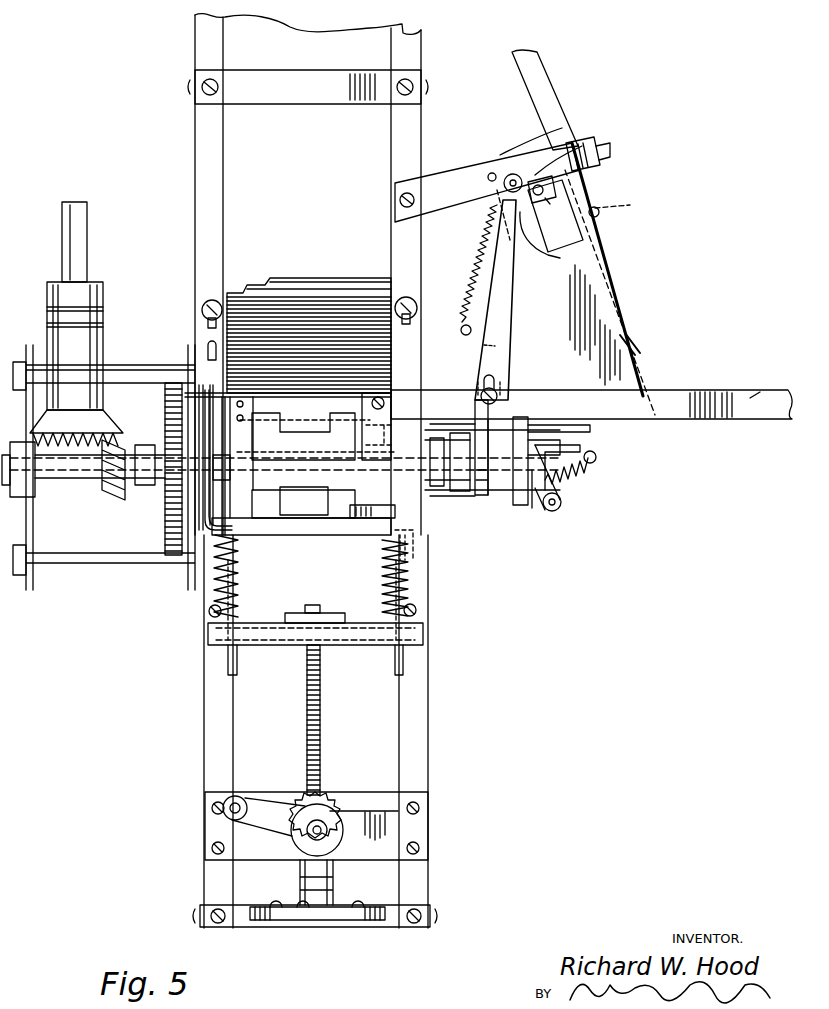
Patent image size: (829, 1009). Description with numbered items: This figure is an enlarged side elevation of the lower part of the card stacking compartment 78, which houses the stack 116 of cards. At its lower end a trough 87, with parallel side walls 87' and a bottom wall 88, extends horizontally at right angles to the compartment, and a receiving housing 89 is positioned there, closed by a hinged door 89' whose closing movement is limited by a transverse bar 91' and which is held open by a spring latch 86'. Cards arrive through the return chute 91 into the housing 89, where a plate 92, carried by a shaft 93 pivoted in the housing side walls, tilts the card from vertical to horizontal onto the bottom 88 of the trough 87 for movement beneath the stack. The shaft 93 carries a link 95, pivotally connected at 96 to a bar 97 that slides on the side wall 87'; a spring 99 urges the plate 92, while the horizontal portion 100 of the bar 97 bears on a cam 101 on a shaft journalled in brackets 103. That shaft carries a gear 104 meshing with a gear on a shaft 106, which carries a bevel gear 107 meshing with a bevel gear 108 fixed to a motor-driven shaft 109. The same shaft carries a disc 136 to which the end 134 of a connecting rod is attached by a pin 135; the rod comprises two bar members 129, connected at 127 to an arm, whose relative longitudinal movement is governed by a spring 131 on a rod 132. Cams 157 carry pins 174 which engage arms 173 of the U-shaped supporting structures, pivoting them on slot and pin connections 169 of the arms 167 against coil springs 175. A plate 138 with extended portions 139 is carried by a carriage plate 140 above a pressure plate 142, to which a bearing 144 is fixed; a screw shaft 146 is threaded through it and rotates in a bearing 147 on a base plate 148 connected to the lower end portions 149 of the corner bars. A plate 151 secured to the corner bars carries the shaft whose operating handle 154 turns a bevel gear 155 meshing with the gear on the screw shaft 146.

The stacking compartment 78 is at (372, 165).
The stack of cards 116 is at (345, 288).
The slot and pin connection 169 is at (200, 312).
The arm 167 is at (195, 338).
The arm 173 is at (385, 445).
The cam 157 is at (270, 415).
The pin 174 is at (348, 448).
The extended portion 139 is at (327, 525).
The plate 138 is at (395, 512).
The carriage plate 140 is at (413, 538).
The shaft 109 is at (85, 250).
The gear 104 is at (168, 530).
The bevel gear 108 is at (110, 418).
The bevel gear 107 is at (112, 500).
The shaft 106 is at (155, 450).
The return chute 91 is at (549, 100).
The pivotal connection 96 is at (510, 170).
The link 95 is at (565, 140).
The spring latch 86' is at (600, 152).
The shaft 93 is at (560, 195).
The plate 92 is at (612, 206).
The receiving housing 89 is at (607, 269).
The door 89' is at (610, 292).
The transverse bar 91' is at (646, 343).
The bar 97 is at (500, 318).
The spring 99 is at (470, 240).
The horizontal portion 100 is at (500, 395).
The bottom wall 88 is at (725, 419).
The side wall 87' is at (698, 384).
The trough 87 is at (751, 381).
The bracket 103 is at (432, 485).
The pin 135 is at (545, 425).
The connection 127 is at (580, 446).
The bar member 129 is at (585, 458).
The spring 131 is at (578, 490).
The rod 132 is at (558, 510).
The end 134 is at (545, 510).
The disc 136 is at (524, 510).
The cam 101 is at (492, 490).
The coil spring 175 is at (213, 575).
The pressure plate 142 is at (423, 635).
The bearing 144 is at (325, 613).
The screw shaft 146 is at (320, 740).
The plate 151 is at (418, 830).
The operating handle 154 is at (250, 805).
The bevel gear 155 is at (335, 795).
The bearing 147 is at (325, 878).
The base plate 148 is at (245, 905).
The lower end portion 149 is at (430, 875).